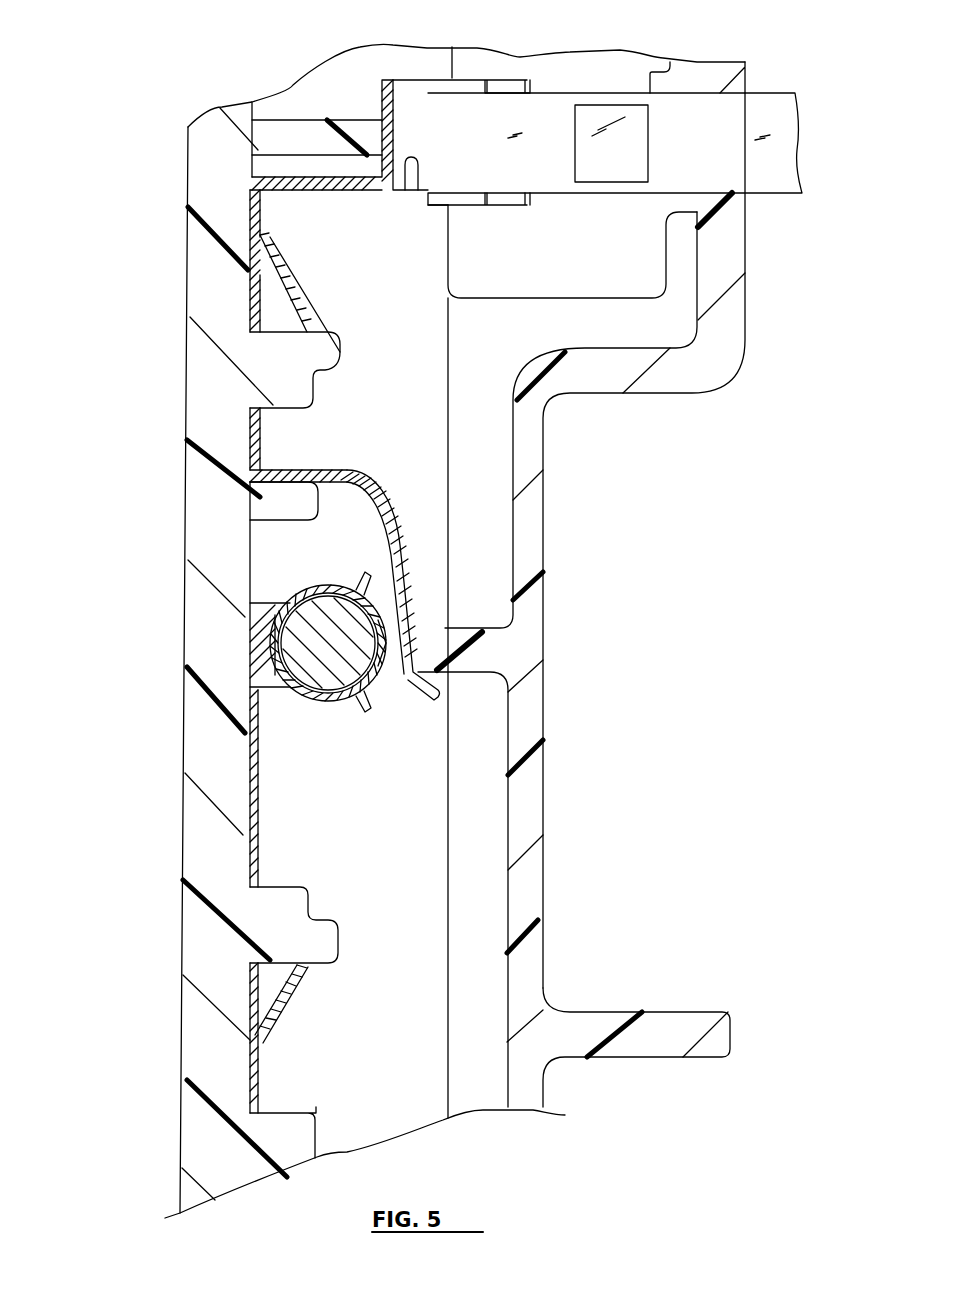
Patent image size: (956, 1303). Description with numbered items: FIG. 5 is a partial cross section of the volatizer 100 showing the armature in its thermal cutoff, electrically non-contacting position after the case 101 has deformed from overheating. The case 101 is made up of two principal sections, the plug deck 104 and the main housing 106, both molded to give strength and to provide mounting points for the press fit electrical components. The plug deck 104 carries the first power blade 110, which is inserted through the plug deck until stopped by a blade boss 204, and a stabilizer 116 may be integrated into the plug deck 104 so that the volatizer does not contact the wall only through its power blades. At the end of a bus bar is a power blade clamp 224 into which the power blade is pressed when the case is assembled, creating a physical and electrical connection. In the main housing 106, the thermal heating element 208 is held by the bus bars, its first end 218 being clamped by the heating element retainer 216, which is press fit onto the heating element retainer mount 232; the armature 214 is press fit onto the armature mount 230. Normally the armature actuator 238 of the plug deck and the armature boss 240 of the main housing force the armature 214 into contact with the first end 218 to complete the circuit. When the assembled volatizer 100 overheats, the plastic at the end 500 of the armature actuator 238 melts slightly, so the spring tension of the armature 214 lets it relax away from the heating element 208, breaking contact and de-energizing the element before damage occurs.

The volatizer 100 is at (102, 1005).
The case 101 is at (693, 738).
The plug deck 104 is at (713, 362).
The main housing 106 is at (210, 182).
The first power blade 110 is at (762, 178).
The stabilizer 116 is at (685, 1027).
The blade boss 204 is at (615, 165).
The thermal heating element 208 is at (327, 648).
The armature 214 is at (345, 475).
The heating element retainer 216 is at (323, 707).
The first end 218 is at (378, 668).
The power blade clamp 224 is at (448, 197).
The armature mount 230 is at (305, 348).
The heating element retainer mount 232 is at (313, 937).
The armature actuator 238 is at (475, 658).
The armature boss 240 is at (293, 505).
The end of the armature actuator 500 is at (423, 640).